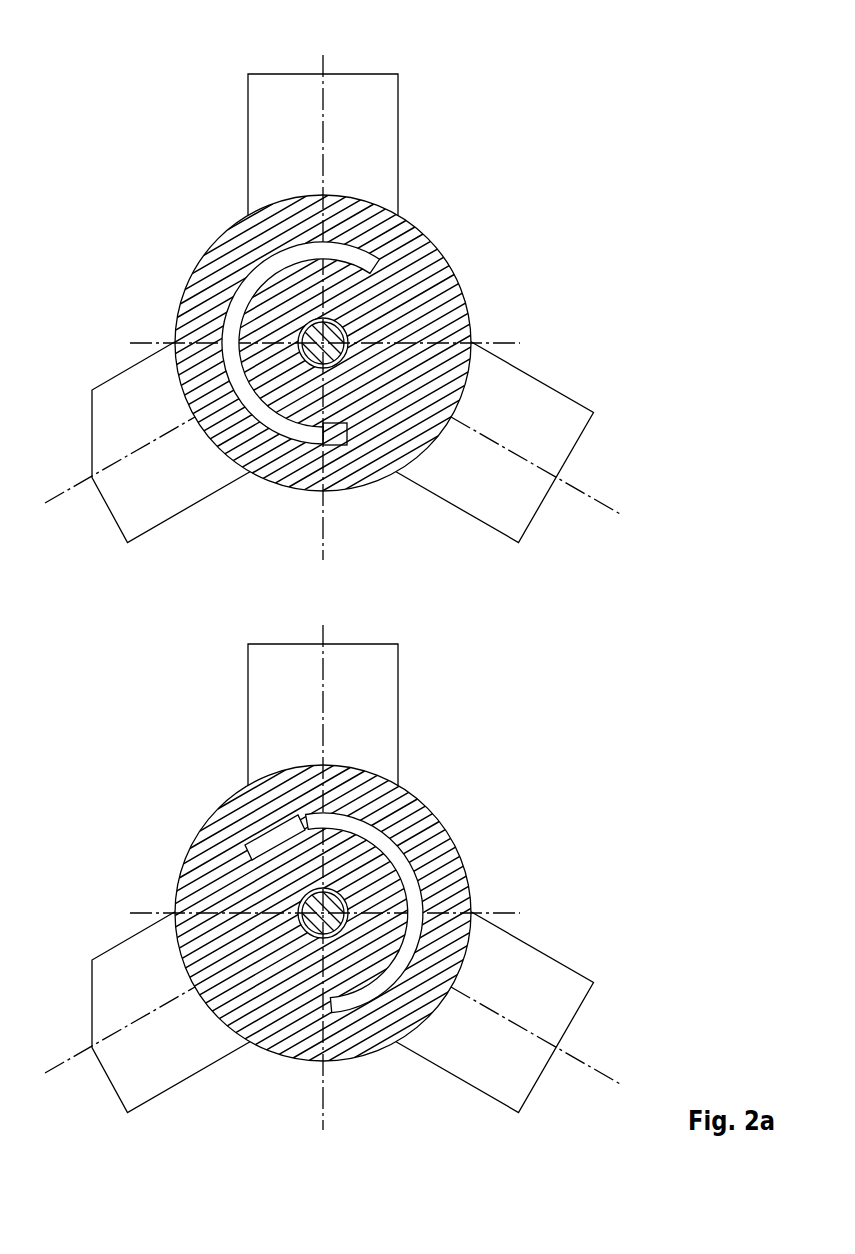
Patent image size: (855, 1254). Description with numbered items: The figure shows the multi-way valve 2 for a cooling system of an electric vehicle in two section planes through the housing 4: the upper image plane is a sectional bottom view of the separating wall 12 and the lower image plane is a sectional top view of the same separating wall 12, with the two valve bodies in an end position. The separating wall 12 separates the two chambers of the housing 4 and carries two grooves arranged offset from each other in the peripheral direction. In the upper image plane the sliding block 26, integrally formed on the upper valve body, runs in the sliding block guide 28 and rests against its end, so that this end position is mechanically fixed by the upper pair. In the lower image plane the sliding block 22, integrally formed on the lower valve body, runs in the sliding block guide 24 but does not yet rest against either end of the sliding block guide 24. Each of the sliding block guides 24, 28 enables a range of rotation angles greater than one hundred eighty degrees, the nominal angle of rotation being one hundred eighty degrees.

The multi-way valve 2 is at (647, 57).
The housing 4 is at (570, 172).
The separating wall 12 is at (452, 295).
The sliding block guide 28 is at (363, 266).
The sliding block 26 is at (348, 434).
The sliding block guide 24 is at (397, 867).
The sliding block 22 is at (307, 825).